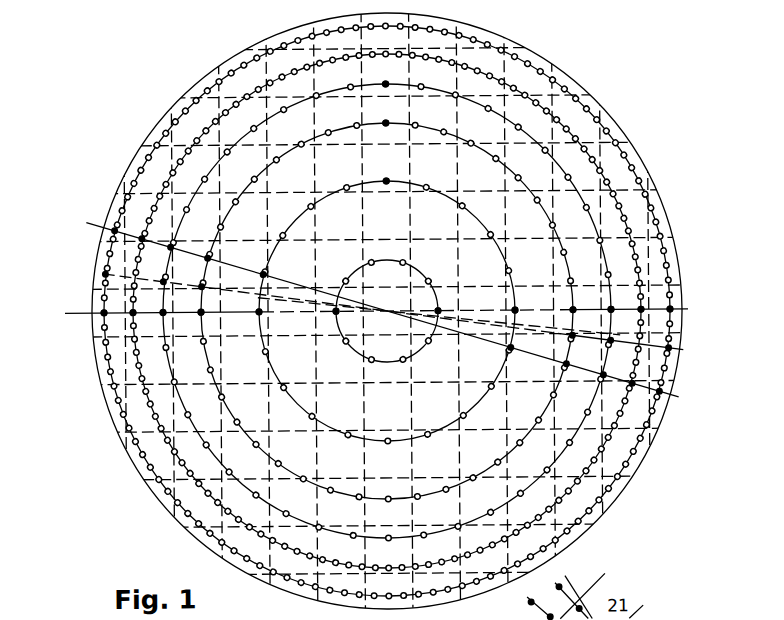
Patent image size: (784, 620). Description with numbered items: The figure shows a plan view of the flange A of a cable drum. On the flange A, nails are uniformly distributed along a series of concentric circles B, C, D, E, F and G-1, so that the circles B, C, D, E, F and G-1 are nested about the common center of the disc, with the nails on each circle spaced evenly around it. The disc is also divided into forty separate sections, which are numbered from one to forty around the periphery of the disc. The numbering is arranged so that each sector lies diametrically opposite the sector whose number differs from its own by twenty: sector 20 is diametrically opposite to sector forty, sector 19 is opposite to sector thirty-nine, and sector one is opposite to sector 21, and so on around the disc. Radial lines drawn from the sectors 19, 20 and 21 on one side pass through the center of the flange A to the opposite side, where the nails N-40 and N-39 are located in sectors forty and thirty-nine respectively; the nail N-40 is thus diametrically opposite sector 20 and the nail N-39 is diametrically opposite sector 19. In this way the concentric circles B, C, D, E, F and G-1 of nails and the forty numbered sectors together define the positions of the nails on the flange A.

The flange A is at (473, 88).
The concentric circle B is at (567, 88).
The concentric circle C is at (582, 140).
The concentric circle D is at (577, 188).
The concentric circle E is at (560, 245).
The concentric circle F is at (513, 287).
The concentric circle G-1 is at (392, 328).
The sector 19 is at (316, 288).
The sector 20 is at (103, 272).
The sector 21 is at (362, 311).
The nail in sector forty N-40 is at (651, 351).
The nail in sector thirty-nine N-39 is at (645, 389).